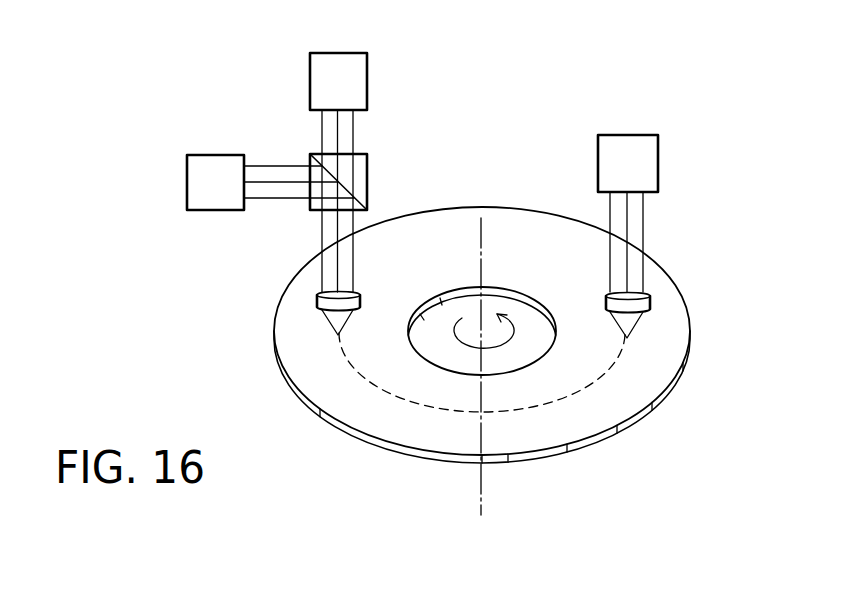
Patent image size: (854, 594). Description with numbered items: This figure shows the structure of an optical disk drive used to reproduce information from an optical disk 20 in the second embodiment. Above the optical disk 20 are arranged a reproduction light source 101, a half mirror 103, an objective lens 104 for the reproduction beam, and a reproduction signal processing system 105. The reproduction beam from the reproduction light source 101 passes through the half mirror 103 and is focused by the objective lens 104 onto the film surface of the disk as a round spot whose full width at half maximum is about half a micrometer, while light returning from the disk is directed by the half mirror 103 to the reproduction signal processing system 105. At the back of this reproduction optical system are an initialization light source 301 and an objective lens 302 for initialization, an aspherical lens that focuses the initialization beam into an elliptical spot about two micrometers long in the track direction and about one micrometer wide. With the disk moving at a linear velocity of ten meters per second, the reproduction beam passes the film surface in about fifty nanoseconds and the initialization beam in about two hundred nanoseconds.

The reproduction light source 101 is at (368, 90).
The half mirror 103 is at (368, 182).
The reproduction signal processing system 105 is at (200, 212).
The objective lens for a reproduction beam 104 is at (317, 299).
The initialization light source 301 is at (658, 178).
The objective lens for initialization 302 is at (652, 302).
The optical disk 20 is at (693, 337).